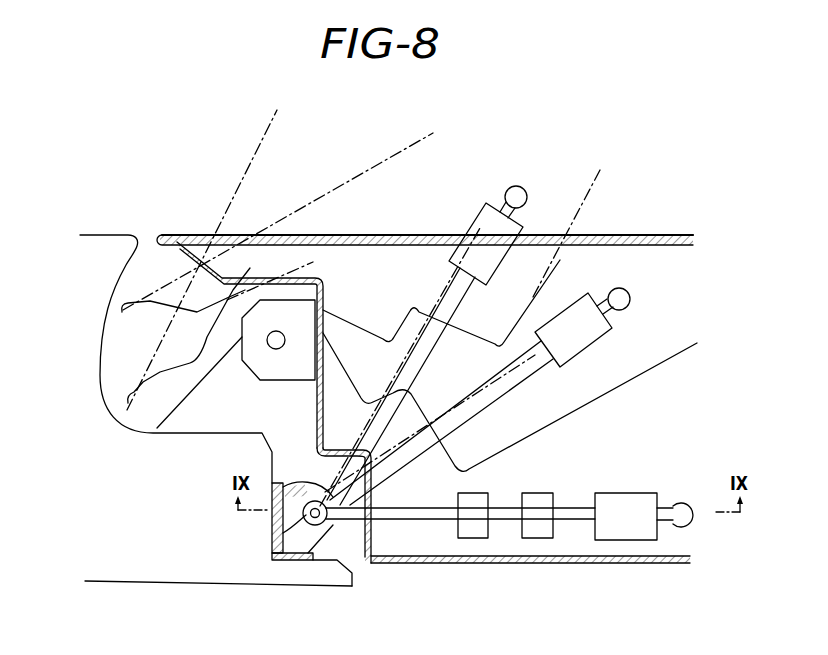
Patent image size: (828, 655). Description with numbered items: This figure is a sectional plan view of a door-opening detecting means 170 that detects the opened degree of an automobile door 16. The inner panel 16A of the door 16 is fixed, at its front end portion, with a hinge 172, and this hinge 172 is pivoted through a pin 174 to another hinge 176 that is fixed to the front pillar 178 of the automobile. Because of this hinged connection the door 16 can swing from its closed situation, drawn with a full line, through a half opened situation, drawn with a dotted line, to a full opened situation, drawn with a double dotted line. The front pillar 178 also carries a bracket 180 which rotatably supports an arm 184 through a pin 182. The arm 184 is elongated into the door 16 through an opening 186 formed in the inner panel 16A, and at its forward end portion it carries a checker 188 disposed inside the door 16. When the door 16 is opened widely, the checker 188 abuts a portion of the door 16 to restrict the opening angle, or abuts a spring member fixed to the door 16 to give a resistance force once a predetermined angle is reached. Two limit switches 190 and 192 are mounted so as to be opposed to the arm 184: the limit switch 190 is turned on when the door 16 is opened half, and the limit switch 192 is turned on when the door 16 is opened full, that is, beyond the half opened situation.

The door 16 is at (630, 235).
The inner panel 16A is at (616, 565).
The door-opening detecting means 170 is at (667, 261).
The hinge 172 is at (294, 385).
The pin 174 is at (280, 324).
The hinge 176 is at (198, 434).
The front pillar 178 is at (201, 584).
The bracket 180 is at (334, 532).
The pin 182 is at (275, 537).
The arm 184 is at (418, 507).
The opening 186 is at (370, 532).
The checker 188 is at (628, 493).
The limit switch 190 is at (546, 493).
The limit switch 192 is at (483, 493).